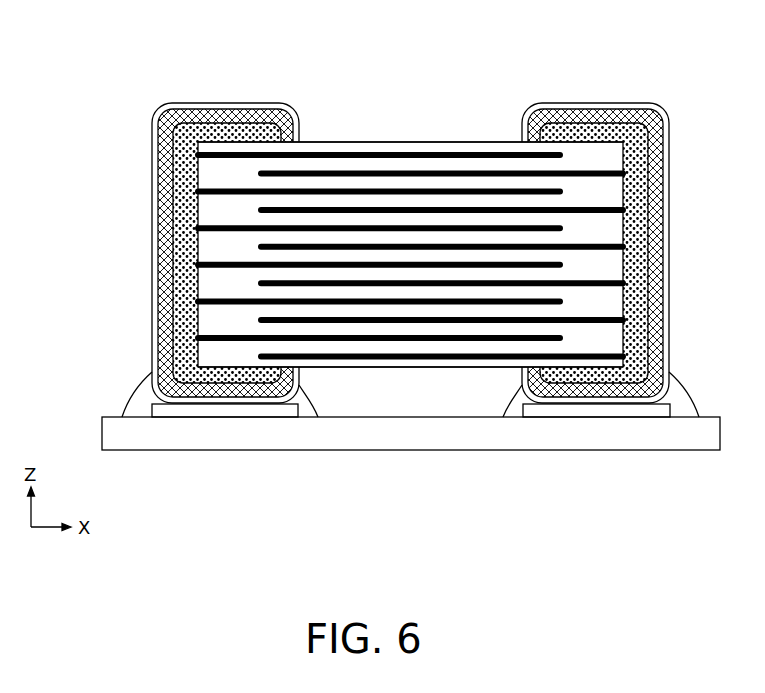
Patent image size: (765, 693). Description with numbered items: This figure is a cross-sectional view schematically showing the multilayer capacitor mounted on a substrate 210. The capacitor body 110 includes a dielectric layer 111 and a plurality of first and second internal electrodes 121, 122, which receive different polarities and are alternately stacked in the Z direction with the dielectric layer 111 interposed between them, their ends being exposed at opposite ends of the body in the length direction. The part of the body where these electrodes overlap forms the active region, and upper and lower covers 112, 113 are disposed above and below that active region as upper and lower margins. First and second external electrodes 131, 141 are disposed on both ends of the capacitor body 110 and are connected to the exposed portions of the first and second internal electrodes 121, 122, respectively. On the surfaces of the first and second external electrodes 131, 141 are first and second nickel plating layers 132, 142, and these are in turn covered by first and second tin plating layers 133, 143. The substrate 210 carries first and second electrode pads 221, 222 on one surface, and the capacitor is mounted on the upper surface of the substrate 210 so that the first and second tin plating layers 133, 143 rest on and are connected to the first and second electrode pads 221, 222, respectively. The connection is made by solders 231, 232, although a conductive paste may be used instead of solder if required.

The capacitor body 110 is at (443, 266).
The dielectric layer 111 is at (573, 200).
The upper cover 112 is at (371, 142).
The lower cover 113 is at (423, 362).
The first internal electrode 121 is at (433, 152).
The second internal electrode 122 is at (493, 170).
The first external electrode 131 is at (201, 395).
The first nickel plating layer 132 is at (233, 396).
The first tin plating layer 133 is at (270, 400).
The second external electrode 141 is at (560, 402).
The second nickel plating layer 142 is at (598, 403).
The second tin plating layer 143 is at (647, 408).
The substrate 210 is at (358, 433).
The first electrode pad 221 is at (160, 408).
The second electrode pad 222 is at (582, 412).
The solder 231 is at (147, 378).
The solder 232 is at (682, 378).